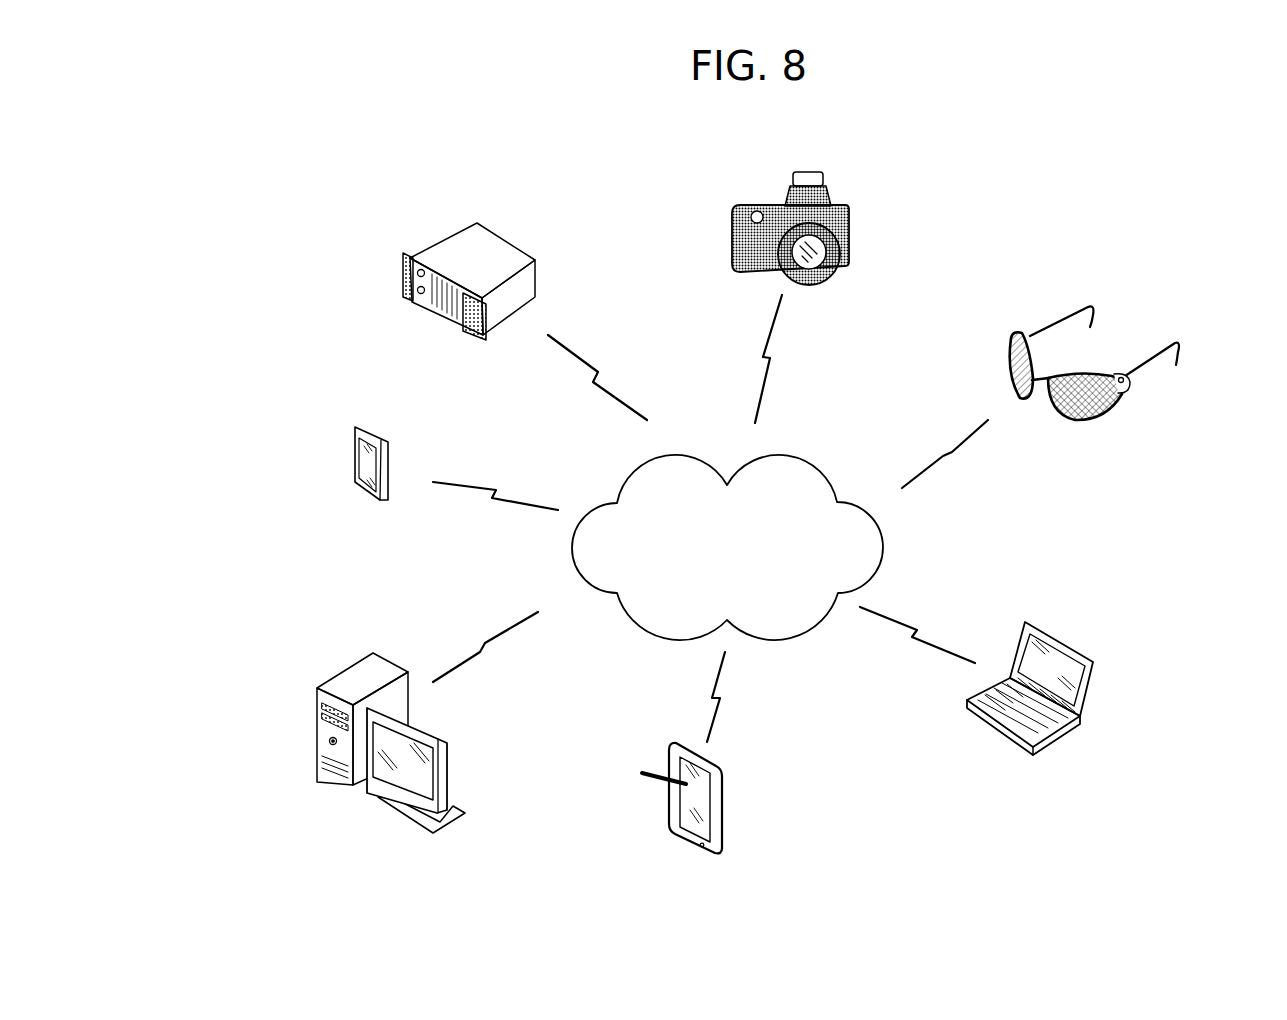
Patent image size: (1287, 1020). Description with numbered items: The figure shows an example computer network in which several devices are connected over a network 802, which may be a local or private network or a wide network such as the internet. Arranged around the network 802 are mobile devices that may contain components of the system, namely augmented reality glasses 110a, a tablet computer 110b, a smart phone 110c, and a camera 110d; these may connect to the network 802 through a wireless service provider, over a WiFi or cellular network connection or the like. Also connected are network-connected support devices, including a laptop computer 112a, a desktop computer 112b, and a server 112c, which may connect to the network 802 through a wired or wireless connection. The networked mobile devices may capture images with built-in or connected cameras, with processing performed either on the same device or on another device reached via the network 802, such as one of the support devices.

The network 802 is at (803, 467).
The server 112c is at (447, 250).
The camera 110d is at (820, 170).
The augmented reality (AR) glasses 110a is at (1087, 305).
The smart phone 110c is at (355, 458).
The desktop computer 112b is at (298, 692).
The tablet computer 110b is at (718, 800).
The laptop computer 112a is at (1095, 667).